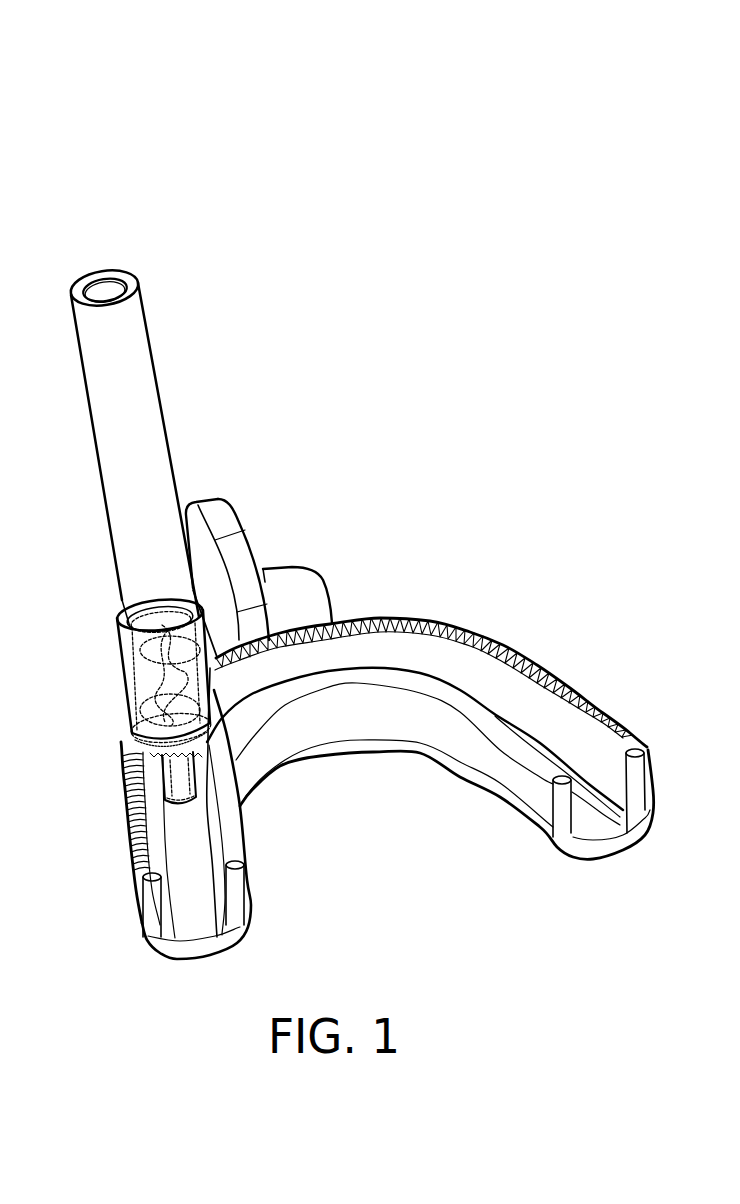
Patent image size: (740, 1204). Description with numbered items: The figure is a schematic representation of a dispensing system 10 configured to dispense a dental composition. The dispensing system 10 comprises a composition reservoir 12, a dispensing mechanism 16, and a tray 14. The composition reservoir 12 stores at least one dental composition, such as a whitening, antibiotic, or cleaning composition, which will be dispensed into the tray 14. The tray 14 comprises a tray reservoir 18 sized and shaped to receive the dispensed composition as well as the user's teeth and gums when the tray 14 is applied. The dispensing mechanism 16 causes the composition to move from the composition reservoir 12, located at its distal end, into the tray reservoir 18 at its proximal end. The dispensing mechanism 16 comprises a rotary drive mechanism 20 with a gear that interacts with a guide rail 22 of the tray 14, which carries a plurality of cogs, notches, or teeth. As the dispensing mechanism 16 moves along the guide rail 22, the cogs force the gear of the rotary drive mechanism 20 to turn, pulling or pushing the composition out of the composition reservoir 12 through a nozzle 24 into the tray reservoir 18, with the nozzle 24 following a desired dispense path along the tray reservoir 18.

The dispensing system 10 is at (540, 99).
The composition reservoir 12 is at (150, 389).
The tray 14 is at (587, 700).
The dispensing mechanism 16 is at (121, 665).
The tray reservoir 18 is at (490, 678).
The rotary drive mechanism 20 is at (132, 751).
The guide rail 22 is at (403, 617).
The nozzle 24 is at (166, 780).